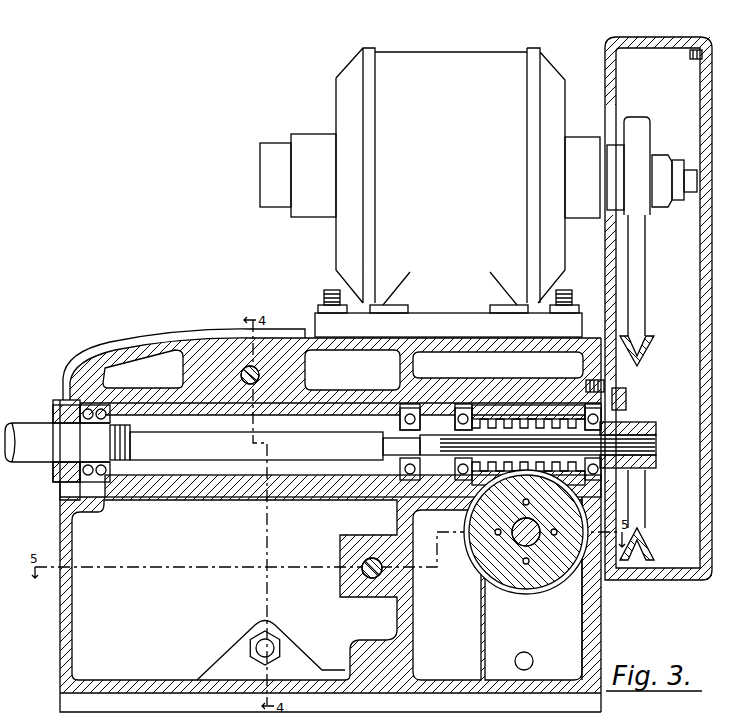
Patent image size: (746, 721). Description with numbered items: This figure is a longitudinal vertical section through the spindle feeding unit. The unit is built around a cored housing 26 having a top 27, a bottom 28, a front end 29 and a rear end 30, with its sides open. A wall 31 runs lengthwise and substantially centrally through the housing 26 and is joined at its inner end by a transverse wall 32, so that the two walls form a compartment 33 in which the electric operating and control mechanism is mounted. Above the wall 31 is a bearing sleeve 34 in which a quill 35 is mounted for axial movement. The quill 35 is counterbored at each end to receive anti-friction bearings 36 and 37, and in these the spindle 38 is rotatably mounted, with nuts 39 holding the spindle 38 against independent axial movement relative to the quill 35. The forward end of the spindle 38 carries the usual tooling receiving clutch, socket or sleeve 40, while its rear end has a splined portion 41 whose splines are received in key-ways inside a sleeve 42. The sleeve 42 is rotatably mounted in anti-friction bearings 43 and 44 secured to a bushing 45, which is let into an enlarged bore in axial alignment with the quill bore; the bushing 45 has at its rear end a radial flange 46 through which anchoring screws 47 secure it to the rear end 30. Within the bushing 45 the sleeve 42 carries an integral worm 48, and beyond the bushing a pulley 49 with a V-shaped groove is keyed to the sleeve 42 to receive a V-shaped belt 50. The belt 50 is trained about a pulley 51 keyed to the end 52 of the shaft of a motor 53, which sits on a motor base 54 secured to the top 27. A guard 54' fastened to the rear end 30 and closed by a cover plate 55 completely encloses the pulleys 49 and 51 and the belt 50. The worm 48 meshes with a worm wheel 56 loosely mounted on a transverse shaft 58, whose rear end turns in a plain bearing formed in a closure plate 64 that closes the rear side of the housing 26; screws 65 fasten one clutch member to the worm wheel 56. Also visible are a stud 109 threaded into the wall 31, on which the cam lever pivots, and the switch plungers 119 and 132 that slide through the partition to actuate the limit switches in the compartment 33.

The cored housing 26 is at (82, 365).
The top 27 is at (290, 336).
The bottom 28 is at (162, 690).
The front end 29 is at (62, 620).
The rear end 30 is at (598, 607).
The wall 31 is at (234, 590).
The transverse wall 32 is at (408, 607).
The compartment 33 is at (75, 648).
The bearing sleeve 34 is at (350, 392).
The quill 35 is at (170, 486).
The anti-friction bearing 36 is at (100, 488).
The anti-friction bearing 37 is at (400, 466).
The spindle 38 is at (322, 458).
The nuts 39 is at (131, 425).
The tooling receiving clutch, socket or sleeve 40 is at (26, 425).
The splined portion 41 is at (657, 446).
The sleeve 42 is at (478, 418).
The anti-friction bearing 43 is at (457, 406).
The anti-friction bearing 44 is at (586, 398).
The bushing 45 is at (498, 408).
The radial flange 46 is at (630, 388).
The anchoring screws 47 is at (640, 400).
The worm 48 is at (520, 417).
The pulley 49 is at (647, 498).
The V-shaped belt 50 is at (646, 305).
The pulley 51 is at (651, 128).
The end of motor shaft 52 is at (676, 172).
The motor 53 is at (426, 57).
The motor base 54 is at (436, 306).
The guard 54' is at (658, 294).
The cover plate 55 is at (703, 56).
The worm wheel 56 is at (540, 586).
The transverse shaft 58 is at (520, 546).
The closure plate 64 is at (533, 590).
The screws 65 is at (496, 536).
The stud 109 is at (282, 645).
The switch plunger 119 is at (372, 580).
The plunger 132 is at (246, 368).